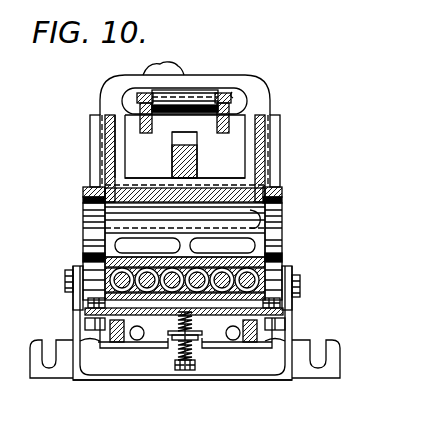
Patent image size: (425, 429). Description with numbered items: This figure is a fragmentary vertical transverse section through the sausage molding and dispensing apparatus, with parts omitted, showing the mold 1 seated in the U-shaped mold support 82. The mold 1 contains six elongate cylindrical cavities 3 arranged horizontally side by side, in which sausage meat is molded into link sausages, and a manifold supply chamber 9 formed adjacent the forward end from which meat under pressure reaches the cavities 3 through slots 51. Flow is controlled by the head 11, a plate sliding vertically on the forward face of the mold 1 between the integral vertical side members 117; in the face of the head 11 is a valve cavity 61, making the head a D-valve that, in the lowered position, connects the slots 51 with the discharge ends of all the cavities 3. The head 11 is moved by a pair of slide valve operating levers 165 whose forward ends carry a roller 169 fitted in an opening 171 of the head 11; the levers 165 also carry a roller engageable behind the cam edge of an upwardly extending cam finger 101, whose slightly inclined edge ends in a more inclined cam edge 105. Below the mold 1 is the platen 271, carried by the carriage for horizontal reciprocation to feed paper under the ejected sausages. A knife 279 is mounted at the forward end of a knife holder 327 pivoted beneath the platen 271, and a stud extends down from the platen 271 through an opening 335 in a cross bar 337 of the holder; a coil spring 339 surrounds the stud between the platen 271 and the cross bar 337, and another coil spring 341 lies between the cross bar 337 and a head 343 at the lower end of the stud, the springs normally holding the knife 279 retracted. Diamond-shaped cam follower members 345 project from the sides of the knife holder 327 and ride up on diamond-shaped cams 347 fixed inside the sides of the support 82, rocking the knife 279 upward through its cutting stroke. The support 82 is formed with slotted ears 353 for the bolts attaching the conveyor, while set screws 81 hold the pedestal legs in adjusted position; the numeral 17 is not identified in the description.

The head 11 is at (268, 101).
The side member 117 is at (105, 152).
The roller 169 is at (182, 92).
The opening 171 is at (233, 91).
The slide valve operating lever 165 is at (146, 134).
The cam finger 101 is at (180, 165).
The cam edge 105 is at (182, 131).
The mold 1 is at (77, 191).
The manifold supply chamber 9 is at (112, 231).
The valve cavity 61 is at (262, 222).
The slot 51 is at (150, 253).
The bearing rollers 17 is at (120, 270).
The cavity 3 is at (95, 270).
The set screw 81 is at (148, 323).
The platen 271 is at (90, 310).
The cam 347 is at (92, 323).
The cam follower member 345 is at (80, 341).
The knife holder 327 is at (117, 342).
The knife 279 is at (144, 320).
The cross bar 337 is at (178, 342).
The coil spring 339 is at (197, 322).
The opening 335 is at (210, 340).
The coil spring 341 is at (192, 357).
The head 343 is at (178, 370).
The U-shaped mold support 82 is at (176, 386).
The slotted ear 353 is at (35, 364).